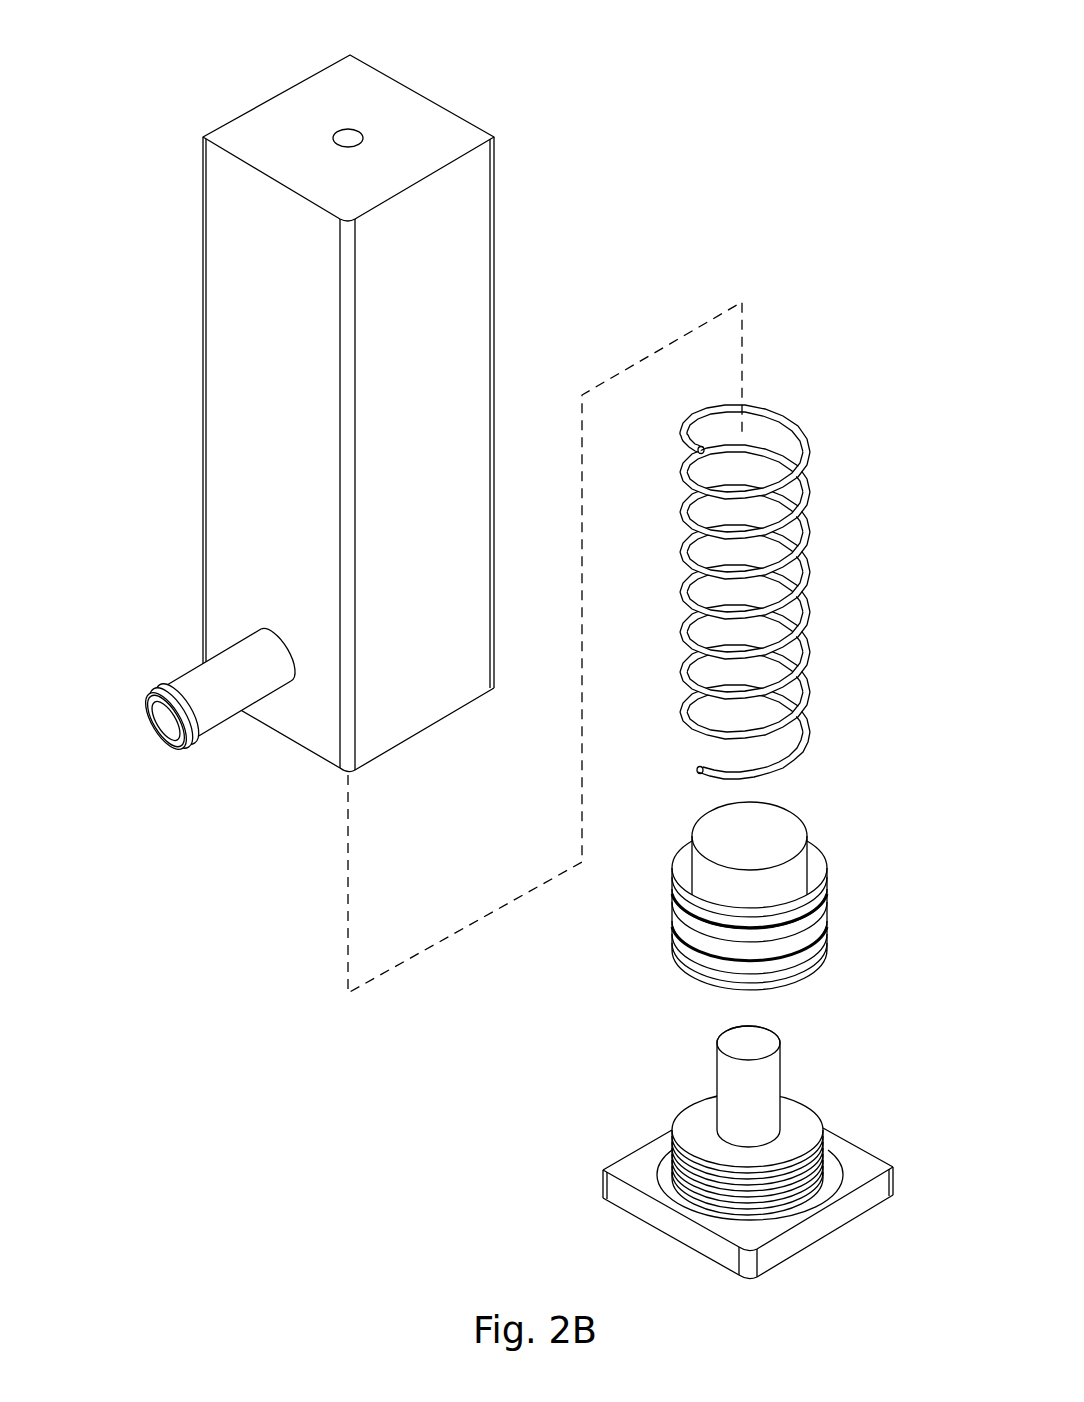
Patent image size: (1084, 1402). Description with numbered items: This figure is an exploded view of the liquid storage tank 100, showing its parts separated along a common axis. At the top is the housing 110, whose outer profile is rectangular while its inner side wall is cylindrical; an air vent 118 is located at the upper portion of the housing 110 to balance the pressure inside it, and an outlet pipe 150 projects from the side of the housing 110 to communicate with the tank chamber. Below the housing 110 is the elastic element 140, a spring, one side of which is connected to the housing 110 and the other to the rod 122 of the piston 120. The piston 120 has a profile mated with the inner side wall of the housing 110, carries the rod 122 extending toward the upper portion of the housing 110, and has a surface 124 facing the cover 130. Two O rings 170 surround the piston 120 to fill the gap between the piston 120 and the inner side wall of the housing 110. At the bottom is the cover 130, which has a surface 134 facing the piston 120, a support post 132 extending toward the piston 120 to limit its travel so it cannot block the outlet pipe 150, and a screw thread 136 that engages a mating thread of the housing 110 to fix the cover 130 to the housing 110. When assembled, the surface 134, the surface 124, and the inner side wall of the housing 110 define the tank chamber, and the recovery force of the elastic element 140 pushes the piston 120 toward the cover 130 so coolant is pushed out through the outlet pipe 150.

The liquid storage tank 100 is at (150, 5).
The housing 110 is at (230, 340).
The air vent 118 is at (346, 135).
The piston 120 is at (807, 932).
The rod 122 is at (807, 865).
The surface 124 is at (803, 976).
The cover 130 is at (628, 1197).
The support post 132 is at (763, 1072).
The surface 134 is at (798, 1120).
The screw thread 136 is at (677, 1173).
The elastic element 140 is at (803, 622).
The outlet pipe 150 is at (198, 680).
The O ring 170 is at (803, 906).